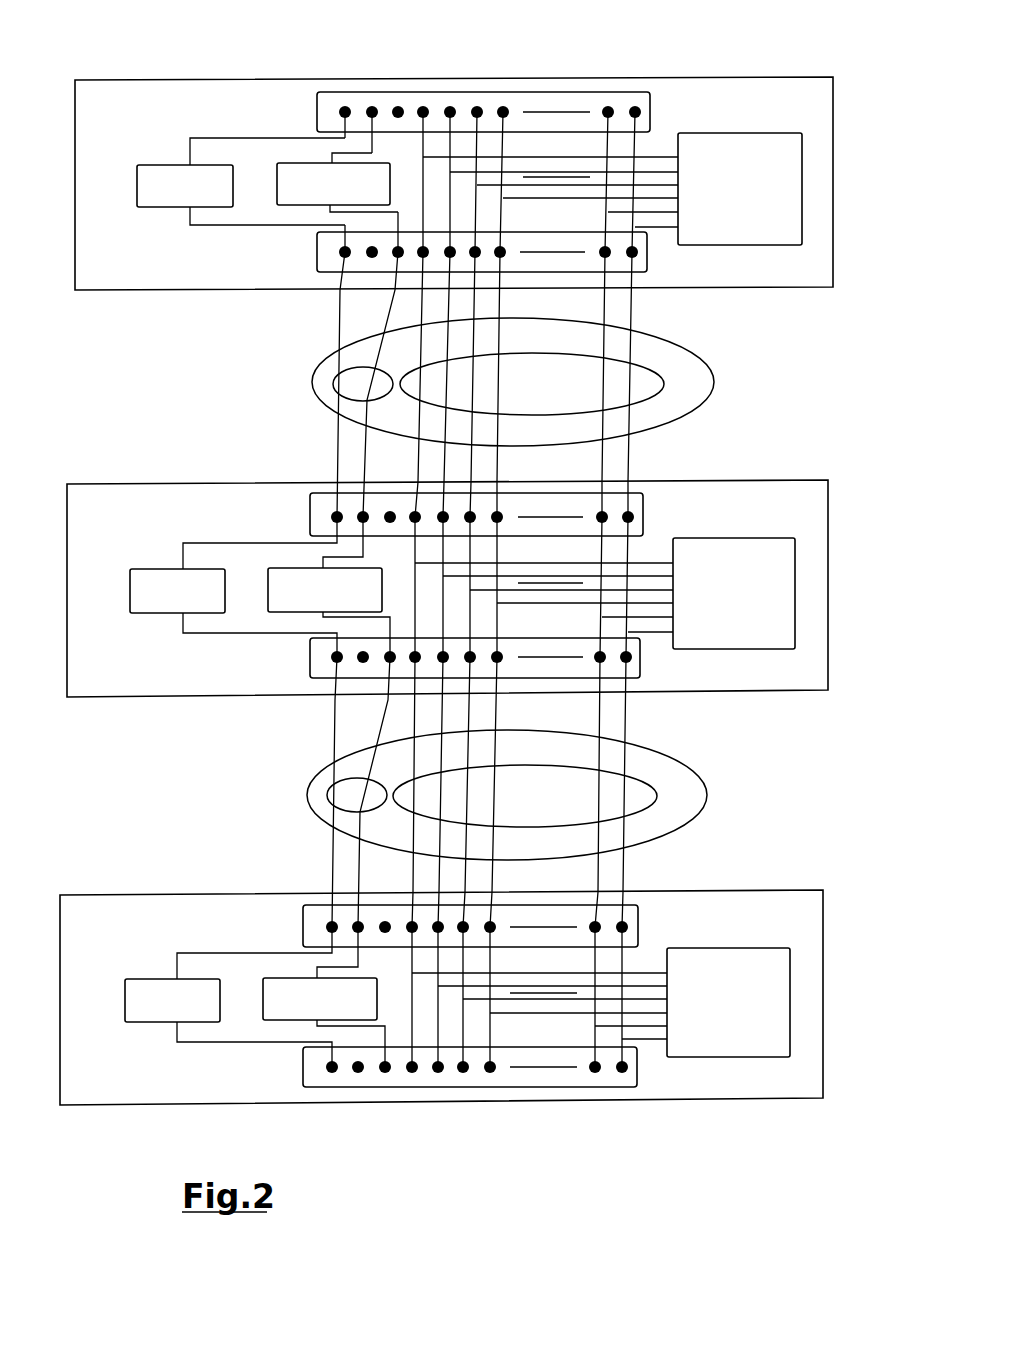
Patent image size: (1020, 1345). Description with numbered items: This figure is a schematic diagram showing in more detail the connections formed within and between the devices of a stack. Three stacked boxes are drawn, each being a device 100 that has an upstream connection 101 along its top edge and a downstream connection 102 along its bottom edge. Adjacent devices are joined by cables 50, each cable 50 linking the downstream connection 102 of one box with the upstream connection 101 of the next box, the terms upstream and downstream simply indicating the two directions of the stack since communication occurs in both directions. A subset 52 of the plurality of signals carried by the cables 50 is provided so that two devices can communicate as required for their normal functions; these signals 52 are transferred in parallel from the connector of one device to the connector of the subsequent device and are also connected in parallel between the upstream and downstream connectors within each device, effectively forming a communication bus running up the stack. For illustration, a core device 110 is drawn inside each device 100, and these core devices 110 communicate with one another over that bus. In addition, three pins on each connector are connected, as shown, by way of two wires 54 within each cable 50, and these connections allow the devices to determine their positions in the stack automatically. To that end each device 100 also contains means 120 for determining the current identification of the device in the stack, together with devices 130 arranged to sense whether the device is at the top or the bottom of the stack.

The device 100 is at (142, 127).
The upstream connection 101 is at (648, 100).
The downstream connection 102 is at (645, 265).
The core device 110 is at (769, 191).
The means for determining the current identification 120 is at (214, 194).
The top or bottom sensing devices 130 is at (356, 194).
The cable 50 is at (670, 348).
The subset of signals 52 is at (648, 395).
The wires 54 is at (330, 378).